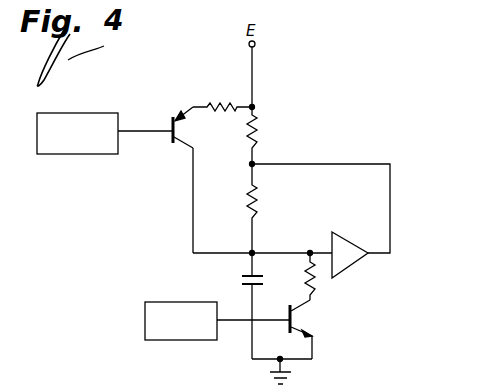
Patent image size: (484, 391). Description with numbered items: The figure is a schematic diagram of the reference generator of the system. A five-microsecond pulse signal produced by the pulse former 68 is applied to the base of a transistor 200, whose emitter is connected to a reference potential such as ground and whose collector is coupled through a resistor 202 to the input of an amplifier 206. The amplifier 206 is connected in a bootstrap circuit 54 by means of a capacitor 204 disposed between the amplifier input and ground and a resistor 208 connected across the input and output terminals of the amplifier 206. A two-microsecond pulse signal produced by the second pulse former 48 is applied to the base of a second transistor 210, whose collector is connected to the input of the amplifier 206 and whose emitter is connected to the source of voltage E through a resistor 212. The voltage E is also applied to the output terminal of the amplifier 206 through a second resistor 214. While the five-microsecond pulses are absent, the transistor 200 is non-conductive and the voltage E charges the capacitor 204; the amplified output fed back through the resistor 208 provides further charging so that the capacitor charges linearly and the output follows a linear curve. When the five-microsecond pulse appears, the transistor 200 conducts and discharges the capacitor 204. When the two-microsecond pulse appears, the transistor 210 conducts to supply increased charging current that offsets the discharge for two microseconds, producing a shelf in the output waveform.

The second pulse former 48 is at (118, 114).
The feedback loop circuit 54 is at (315, 151).
The pulse former 68 is at (223, 296).
The transistor 200 is at (293, 330).
The resistor 202 is at (315, 283).
The capacitor 204 is at (255, 278).
The amplifier 206 is at (358, 227).
The resistor 208 is at (257, 206).
The second transistor 210 is at (175, 148).
The resistor 212 is at (222, 100).
The second resistor 214 is at (257, 134).